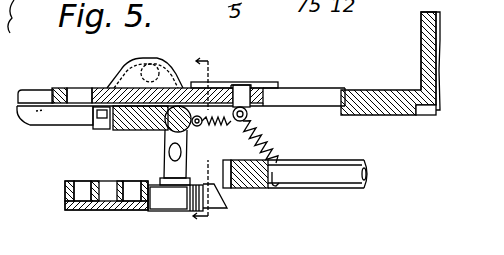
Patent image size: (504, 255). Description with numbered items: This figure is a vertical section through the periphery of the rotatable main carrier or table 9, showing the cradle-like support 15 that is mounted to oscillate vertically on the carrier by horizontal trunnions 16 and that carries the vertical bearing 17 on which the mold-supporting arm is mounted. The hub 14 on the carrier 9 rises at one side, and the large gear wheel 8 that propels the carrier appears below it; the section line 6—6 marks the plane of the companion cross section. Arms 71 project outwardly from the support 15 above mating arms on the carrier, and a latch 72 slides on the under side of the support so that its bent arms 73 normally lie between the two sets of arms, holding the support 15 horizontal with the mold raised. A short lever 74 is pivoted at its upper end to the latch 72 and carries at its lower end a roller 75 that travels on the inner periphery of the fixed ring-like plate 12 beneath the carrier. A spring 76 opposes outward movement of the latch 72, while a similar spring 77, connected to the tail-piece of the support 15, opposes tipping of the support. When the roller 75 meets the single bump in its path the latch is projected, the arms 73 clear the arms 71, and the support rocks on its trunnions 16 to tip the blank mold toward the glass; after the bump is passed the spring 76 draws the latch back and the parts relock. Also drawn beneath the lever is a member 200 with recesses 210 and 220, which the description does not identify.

The arms 71 is at (40, 90).
The vertical bearing 17 is at (78, 88).
The horizontal trunnions 16 is at (147, 68).
The cradle-like support 15 is at (183, 83).
The section line 6 is at (203, 142).
The hub 14 is at (398, 43).
The main carrier or table 9 is at (366, 93).
The bent arms 73 is at (45, 122).
The latch 72 is at (150, 127).
The spring 76 is at (230, 119).
The spring 77 is at (266, 128).
The short lever 74 is at (180, 170).
The large gear wheel 8 is at (248, 184).
The holder block 200 is at (80, 212).
The recess 210 is at (107, 199).
The recess 220 is at (132, 198).
The roller 75 is at (178, 204).
The ring-like plate 12 is at (221, 208).